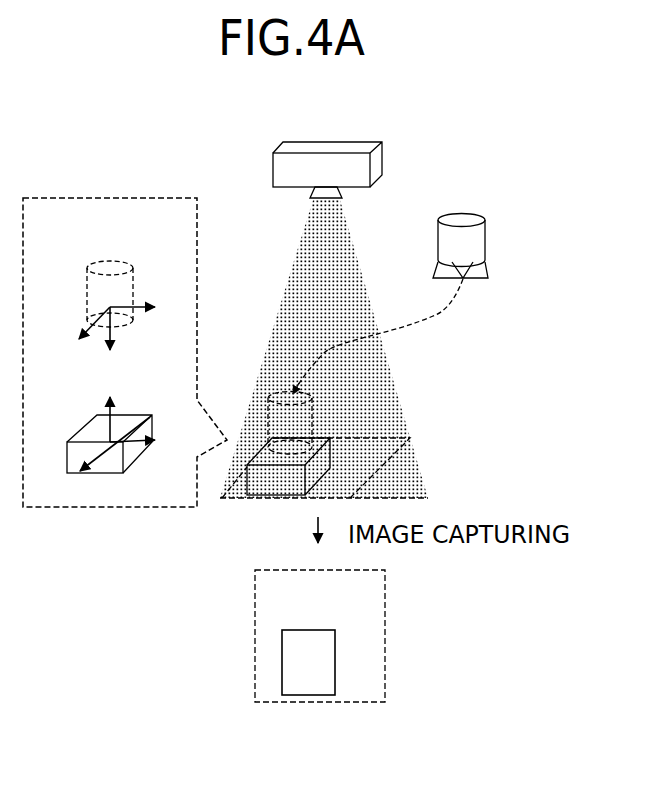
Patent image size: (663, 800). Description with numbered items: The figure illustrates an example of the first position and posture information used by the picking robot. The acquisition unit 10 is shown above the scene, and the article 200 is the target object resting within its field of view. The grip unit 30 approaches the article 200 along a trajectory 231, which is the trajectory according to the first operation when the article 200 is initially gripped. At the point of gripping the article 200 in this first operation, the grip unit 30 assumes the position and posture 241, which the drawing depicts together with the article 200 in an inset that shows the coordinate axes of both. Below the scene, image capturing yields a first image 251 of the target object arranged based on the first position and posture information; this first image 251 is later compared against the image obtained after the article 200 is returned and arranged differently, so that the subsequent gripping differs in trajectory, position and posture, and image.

The acquisition unit 10 is at (346, 142).
The grip unit 30 is at (466, 212).
The position and posture of the grip unit 241 is at (112, 262).
The trajectory of the grip unit 231 is at (433, 317).
The article 200 is at (133, 414).
The first image 251 is at (387, 593).